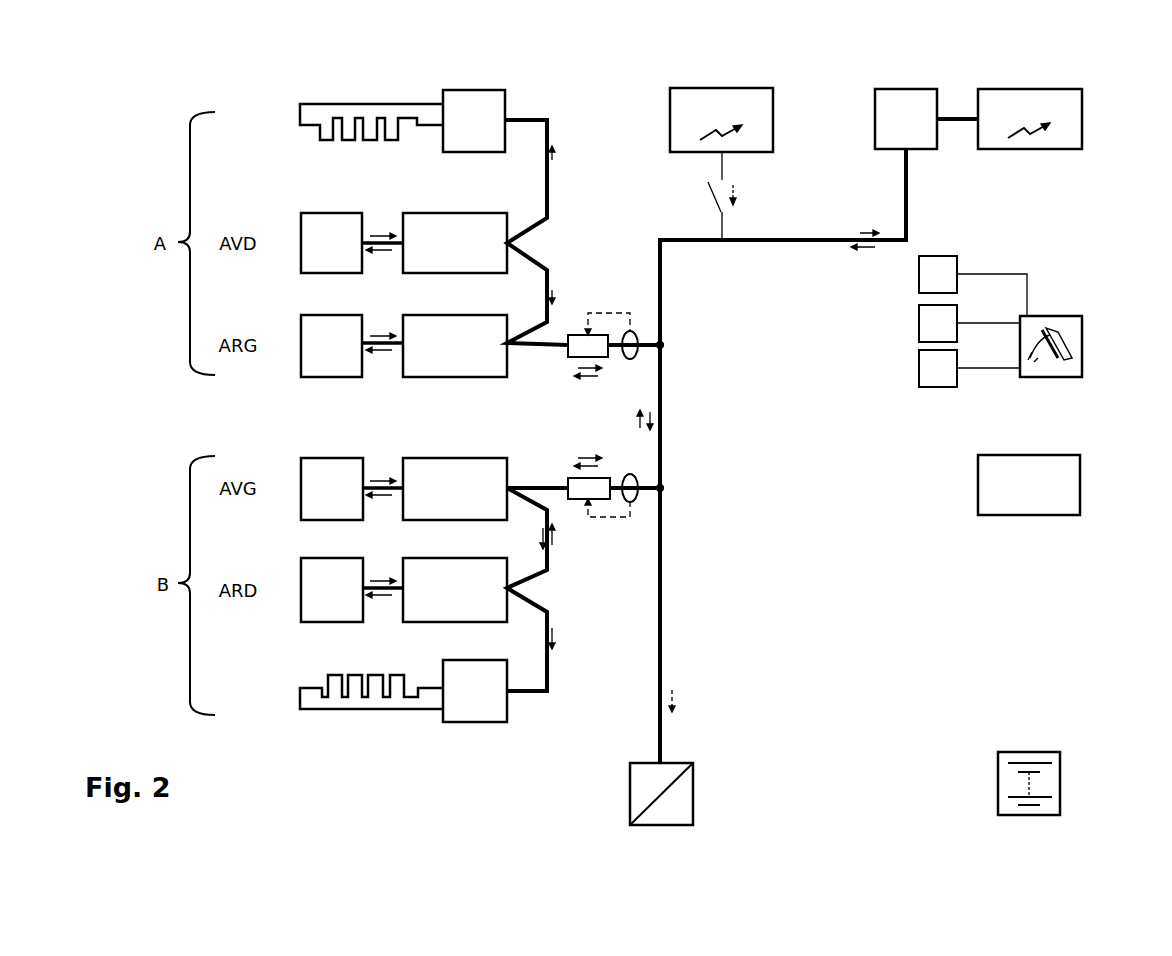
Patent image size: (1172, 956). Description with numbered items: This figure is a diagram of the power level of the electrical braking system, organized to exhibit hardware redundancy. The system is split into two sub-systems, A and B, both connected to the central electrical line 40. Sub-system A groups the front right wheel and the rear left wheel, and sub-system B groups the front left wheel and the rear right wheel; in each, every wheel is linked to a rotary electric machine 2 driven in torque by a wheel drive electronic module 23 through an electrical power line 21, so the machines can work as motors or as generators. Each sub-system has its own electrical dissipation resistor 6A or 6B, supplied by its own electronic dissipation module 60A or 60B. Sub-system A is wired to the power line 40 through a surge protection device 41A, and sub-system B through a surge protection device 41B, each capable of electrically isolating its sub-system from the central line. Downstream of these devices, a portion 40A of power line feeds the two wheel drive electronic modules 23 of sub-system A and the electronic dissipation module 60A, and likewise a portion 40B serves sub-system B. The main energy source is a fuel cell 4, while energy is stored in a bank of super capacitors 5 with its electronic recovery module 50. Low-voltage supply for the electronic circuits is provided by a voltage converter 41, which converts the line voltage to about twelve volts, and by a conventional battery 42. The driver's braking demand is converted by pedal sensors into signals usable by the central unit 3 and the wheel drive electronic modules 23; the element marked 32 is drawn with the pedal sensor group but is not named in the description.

The rotary electric machine 2 is at (345, 213).
The electrical power line 21 is at (392, 243).
The wheel drive electronic module 23 is at (450, 213).
The central unit 3 is at (1060, 453).
The manual control interface 32 is at (1060, 314).
The fuel cell 4 is at (752, 88).
The central electrical line 40 is at (660, 437).
The portion of electrical power line 40A is at (549, 272).
The portion of electrical power line 40B is at (538, 578).
The voltage converter 41 is at (677, 763).
The surge protection device 41A is at (600, 313).
The surge protection device 41B is at (600, 517).
The battery 42 is at (1043, 752).
The bank of super capacitors 5 is at (1050, 89).
The electronic recovery module 50 is at (920, 89).
The electrical dissipation resistor 6A is at (385, 104).
The electronic dissipation module 60A is at (490, 89).
The electrical dissipation resistor 6B is at (385, 712).
The electronic dissipation module 60B is at (475, 723).